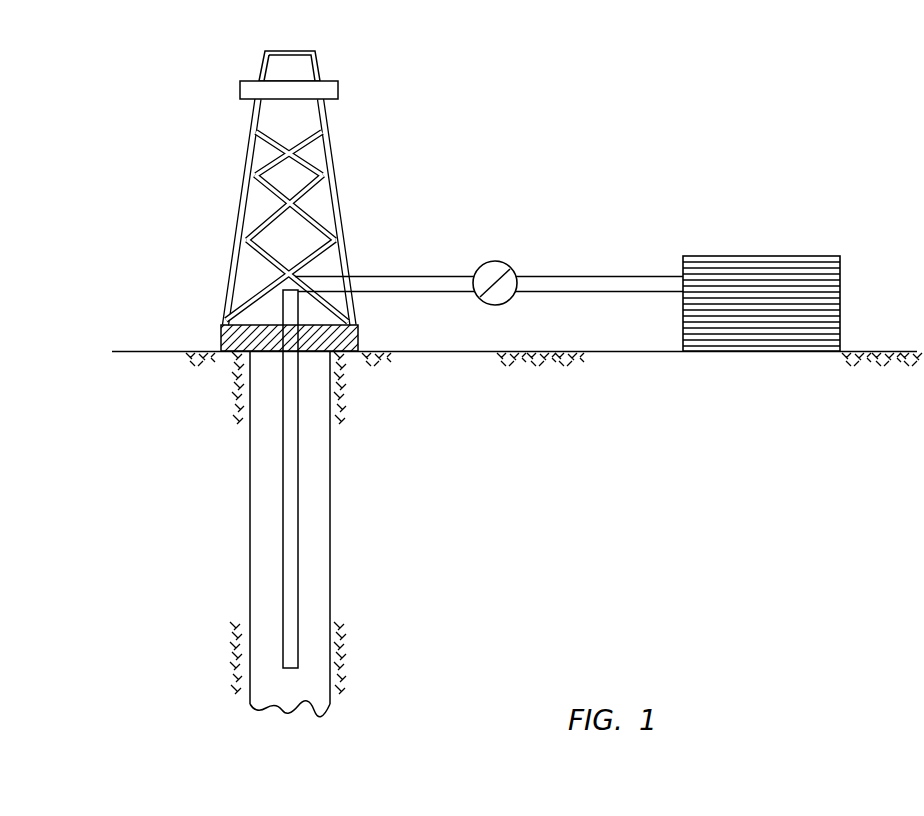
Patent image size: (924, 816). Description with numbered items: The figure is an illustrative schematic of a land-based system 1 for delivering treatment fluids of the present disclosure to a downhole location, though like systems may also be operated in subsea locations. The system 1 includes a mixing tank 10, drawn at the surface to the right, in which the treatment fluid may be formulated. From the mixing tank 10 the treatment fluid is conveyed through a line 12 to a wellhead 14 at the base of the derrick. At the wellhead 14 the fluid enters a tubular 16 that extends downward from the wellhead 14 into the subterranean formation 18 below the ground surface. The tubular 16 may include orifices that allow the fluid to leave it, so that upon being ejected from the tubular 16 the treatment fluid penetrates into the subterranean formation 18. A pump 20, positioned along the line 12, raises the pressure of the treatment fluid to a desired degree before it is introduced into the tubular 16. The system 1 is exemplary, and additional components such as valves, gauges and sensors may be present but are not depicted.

The system 1 is at (113, 81).
The mixing tank 10 is at (829, 255).
The line 12 is at (412, 275).
The wellhead 14 is at (220, 337).
The tubular 16 is at (298, 458).
The subterranean formation 18 is at (178, 543).
The pump 20 is at (504, 267).